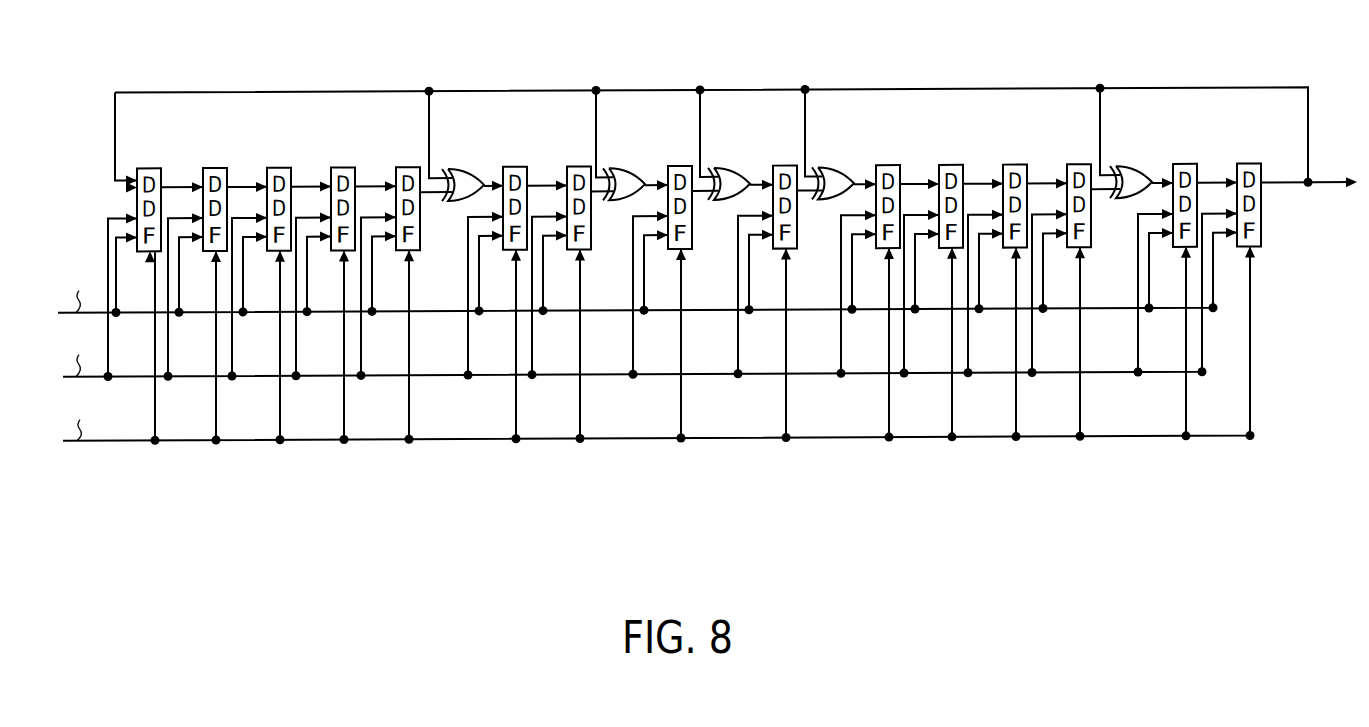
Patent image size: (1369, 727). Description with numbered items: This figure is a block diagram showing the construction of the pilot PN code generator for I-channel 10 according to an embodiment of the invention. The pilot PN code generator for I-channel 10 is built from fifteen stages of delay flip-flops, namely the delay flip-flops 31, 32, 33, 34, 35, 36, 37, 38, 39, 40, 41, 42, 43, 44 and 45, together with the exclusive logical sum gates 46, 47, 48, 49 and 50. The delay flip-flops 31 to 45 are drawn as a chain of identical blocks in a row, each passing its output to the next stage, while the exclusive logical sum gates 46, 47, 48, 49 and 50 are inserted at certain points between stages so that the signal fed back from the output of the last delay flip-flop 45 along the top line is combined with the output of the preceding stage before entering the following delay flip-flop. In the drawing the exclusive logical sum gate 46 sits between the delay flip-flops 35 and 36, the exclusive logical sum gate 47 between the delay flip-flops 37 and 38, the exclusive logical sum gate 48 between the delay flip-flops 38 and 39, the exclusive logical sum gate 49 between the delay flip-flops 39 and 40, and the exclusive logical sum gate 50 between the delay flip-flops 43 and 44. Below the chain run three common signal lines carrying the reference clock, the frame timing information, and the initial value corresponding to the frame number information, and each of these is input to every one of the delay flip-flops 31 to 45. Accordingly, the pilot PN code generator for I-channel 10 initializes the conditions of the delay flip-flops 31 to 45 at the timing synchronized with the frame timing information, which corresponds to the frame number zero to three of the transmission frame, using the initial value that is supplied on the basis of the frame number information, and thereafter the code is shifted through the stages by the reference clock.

The pilot PN code generator for I-channel 10 is at (1280, 26).
The delay flip-flop 31 is at (149, 168).
The delay flip-flop 32 is at (215, 168).
The delay flip-flop 33 is at (279, 168).
The delay flip-flop 34 is at (343, 168).
The delay flip-flop 35 is at (408, 168).
The delay flip-flop 36 is at (515, 168).
The delay flip-flop 37 is at (579, 168).
The delay flip-flop 38 is at (680, 168).
The delay flip-flop 39 is at (785, 168).
The delay flip-flop 40 is at (888, 168).
The delay flip-flop 41 is at (951, 168).
The delay flip-flop 42 is at (1015, 168).
The delay flip-flop 43 is at (1079, 168).
The delay flip-flop 44 is at (1185, 168).
The delay flip-flop 45 is at (1249, 168).
The exclusive logical sum gate 46 is at (457, 170).
The exclusive logical sum gate 47 is at (618, 170).
The exclusive logical sum gate 48 is at (723, 170).
The exclusive logical sum gate 49 is at (827, 170).
The exclusive logical sum gate 50 is at (1125, 170).